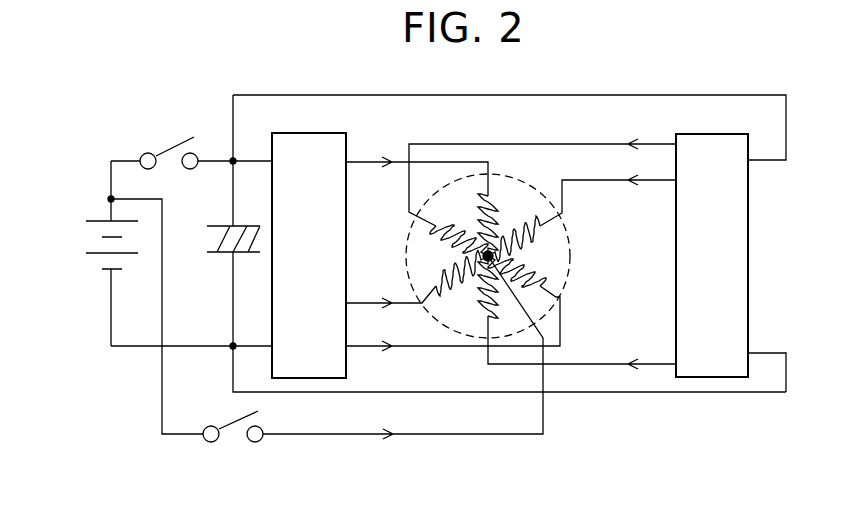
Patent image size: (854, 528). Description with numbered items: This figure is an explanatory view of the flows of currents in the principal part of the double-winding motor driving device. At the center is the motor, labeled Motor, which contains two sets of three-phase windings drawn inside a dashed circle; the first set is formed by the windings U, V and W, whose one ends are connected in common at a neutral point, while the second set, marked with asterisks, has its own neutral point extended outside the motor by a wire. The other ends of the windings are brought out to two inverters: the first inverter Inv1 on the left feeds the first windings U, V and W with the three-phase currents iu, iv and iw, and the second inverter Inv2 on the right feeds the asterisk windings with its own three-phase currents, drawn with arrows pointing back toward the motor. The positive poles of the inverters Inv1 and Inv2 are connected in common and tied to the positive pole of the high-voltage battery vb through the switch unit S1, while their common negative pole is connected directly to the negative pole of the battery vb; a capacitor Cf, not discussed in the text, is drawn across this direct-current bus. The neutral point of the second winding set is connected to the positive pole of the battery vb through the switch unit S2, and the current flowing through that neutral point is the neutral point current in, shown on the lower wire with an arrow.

The switch unit S1 is at (169, 137).
The switch unit S2 is at (233, 444).
The high-voltage battery vb is at (94, 245).
The filter capacitor Cf is at (228, 260).
The first three-phase inverter Inv1 is at (309, 255).
The second three-phase inverter Inv2 is at (712, 255).
The motor Motor is at (475, 225).
The first U-phase winding U is at (479, 225).
The first V-phase winding V is at (452, 273).
The first W-phase winding W is at (527, 271).
The U-phase current of inverter Inv1 iu is at (417, 161).
The V-phase current of inverter Inv1 iv is at (391, 290).
The W-phase current of inverter Inv1 iw is at (453, 318).
The neutral point current in is at (403, 347).